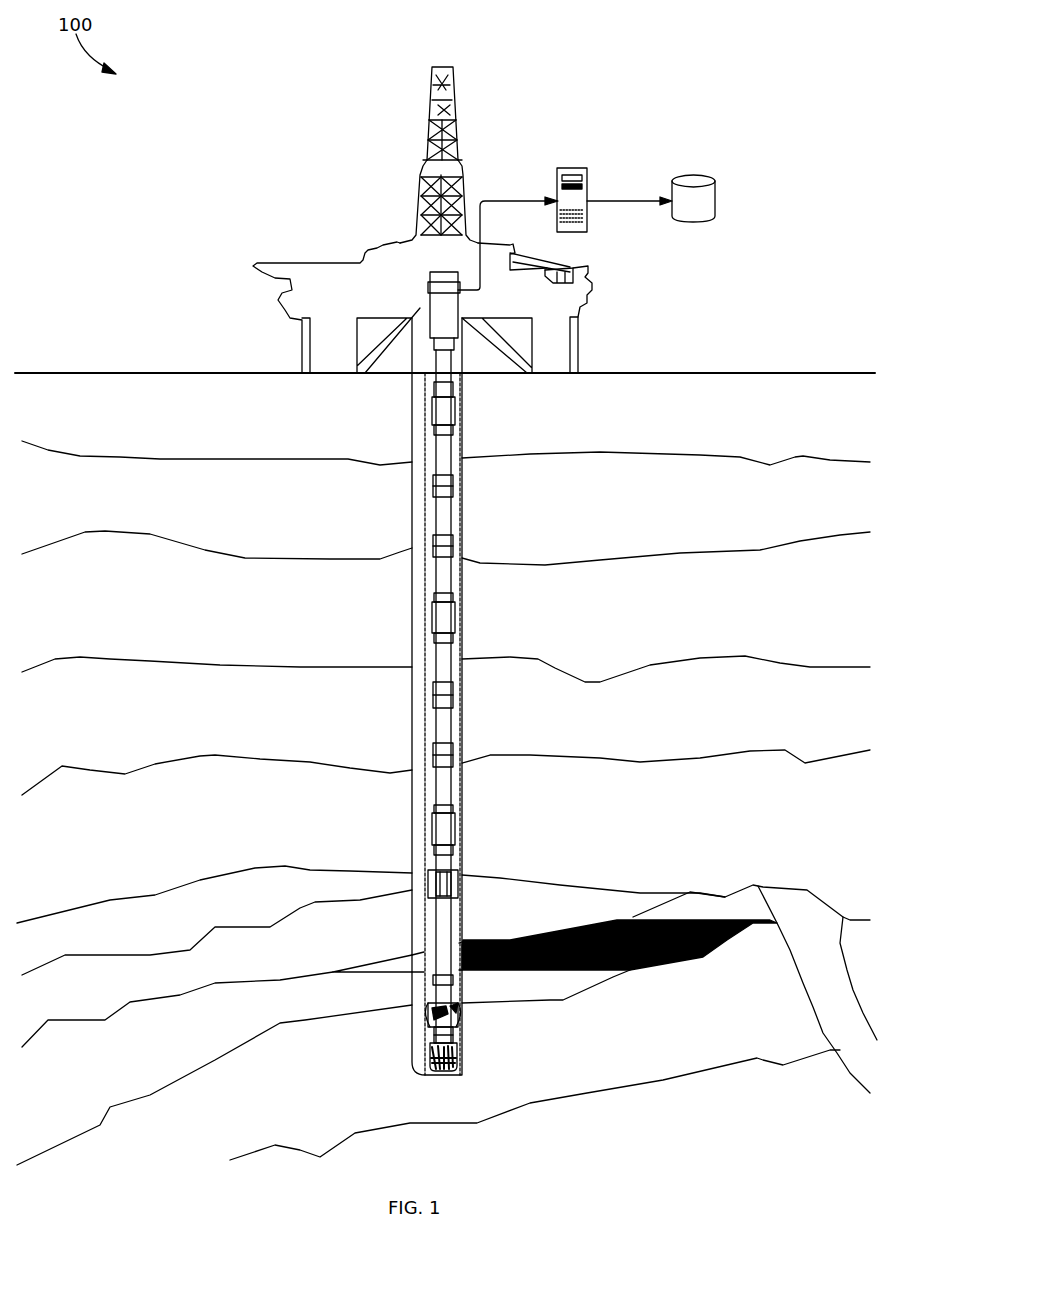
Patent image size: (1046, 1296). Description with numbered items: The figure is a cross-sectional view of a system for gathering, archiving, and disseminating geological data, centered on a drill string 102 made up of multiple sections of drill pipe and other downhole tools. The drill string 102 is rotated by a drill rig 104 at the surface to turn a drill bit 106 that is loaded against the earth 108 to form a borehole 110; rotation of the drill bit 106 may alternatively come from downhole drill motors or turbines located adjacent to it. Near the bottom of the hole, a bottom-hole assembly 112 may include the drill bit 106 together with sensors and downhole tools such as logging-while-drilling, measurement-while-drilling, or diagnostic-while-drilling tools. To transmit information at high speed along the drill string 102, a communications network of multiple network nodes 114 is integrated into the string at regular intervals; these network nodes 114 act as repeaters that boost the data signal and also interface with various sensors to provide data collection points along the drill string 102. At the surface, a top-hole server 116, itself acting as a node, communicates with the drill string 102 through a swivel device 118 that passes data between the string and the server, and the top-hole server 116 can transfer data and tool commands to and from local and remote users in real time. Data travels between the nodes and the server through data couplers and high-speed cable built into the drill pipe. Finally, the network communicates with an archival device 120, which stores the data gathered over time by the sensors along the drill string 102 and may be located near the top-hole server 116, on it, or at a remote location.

The drill string 102 is at (414, 665).
The drill rig 104 is at (400, 254).
The drill bit 106 is at (466, 1073).
The earth 108 is at (216, 428).
The borehole 110 is at (458, 722).
The bottom-hole assembly 112 is at (470, 1066).
The network nodes 114 is at (452, 409).
The top-hole server 116 is at (580, 193).
The swivel device 118 is at (430, 291).
The archival device 120 is at (706, 203).